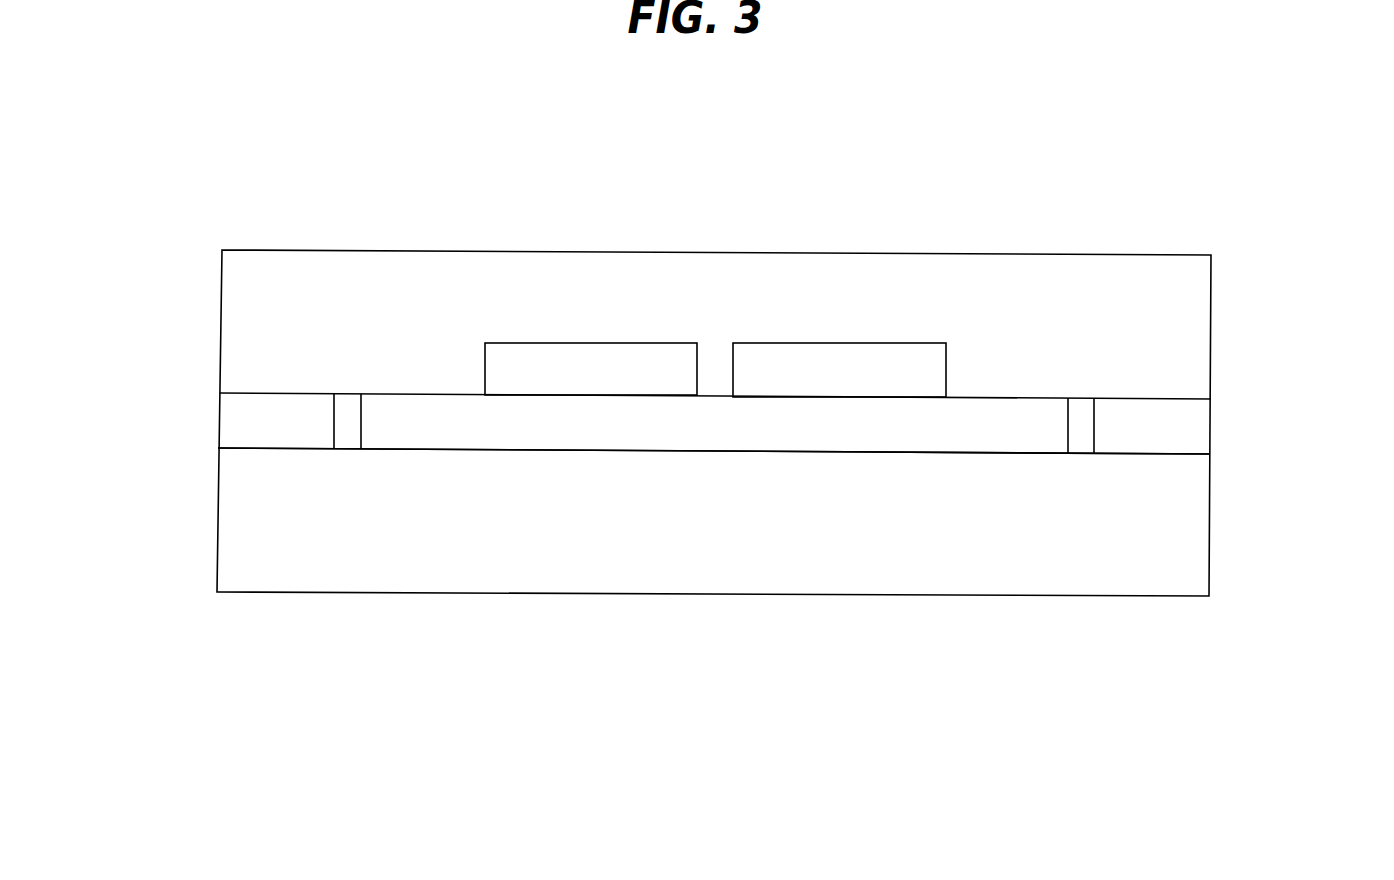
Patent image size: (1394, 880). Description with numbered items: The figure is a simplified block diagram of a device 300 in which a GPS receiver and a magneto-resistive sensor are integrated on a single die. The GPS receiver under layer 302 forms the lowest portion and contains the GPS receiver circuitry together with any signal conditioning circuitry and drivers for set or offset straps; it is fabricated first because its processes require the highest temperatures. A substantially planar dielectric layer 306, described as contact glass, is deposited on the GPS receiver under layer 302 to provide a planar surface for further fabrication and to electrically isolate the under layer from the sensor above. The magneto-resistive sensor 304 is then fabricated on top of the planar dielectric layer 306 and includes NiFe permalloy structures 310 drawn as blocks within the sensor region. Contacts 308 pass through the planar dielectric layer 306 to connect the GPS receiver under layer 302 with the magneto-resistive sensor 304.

The device 300 is at (1203, 196).
The GPS receiver under layer 302 is at (1218, 524).
The magneto-resistive sensor 304 is at (1222, 318).
The planar dielectric layer 306 is at (1222, 422).
The contacts 308 is at (348, 422).
The NiFe permalloy structures 310 is at (875, 378).